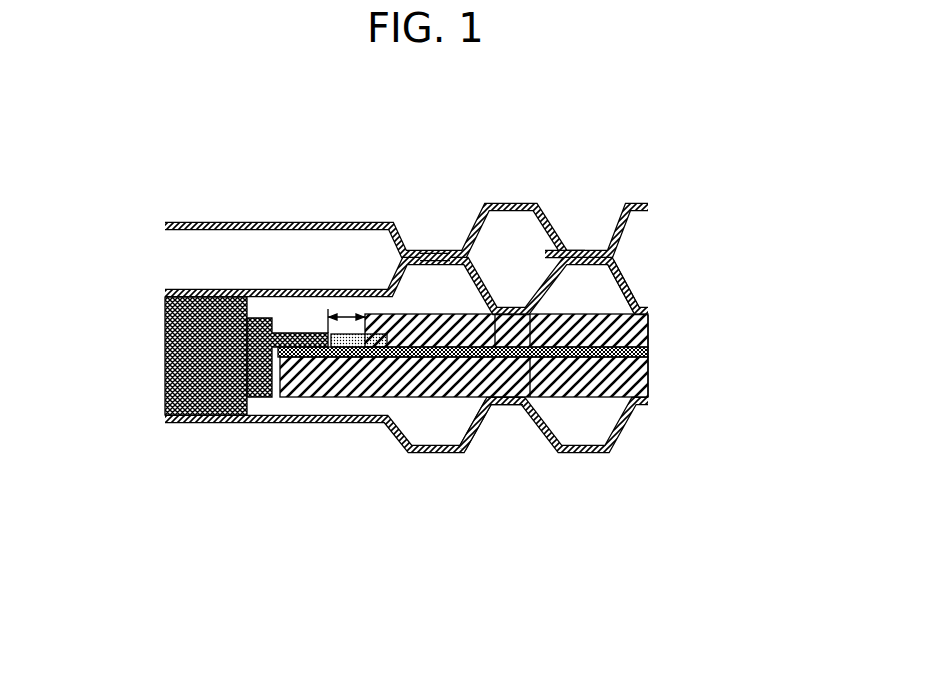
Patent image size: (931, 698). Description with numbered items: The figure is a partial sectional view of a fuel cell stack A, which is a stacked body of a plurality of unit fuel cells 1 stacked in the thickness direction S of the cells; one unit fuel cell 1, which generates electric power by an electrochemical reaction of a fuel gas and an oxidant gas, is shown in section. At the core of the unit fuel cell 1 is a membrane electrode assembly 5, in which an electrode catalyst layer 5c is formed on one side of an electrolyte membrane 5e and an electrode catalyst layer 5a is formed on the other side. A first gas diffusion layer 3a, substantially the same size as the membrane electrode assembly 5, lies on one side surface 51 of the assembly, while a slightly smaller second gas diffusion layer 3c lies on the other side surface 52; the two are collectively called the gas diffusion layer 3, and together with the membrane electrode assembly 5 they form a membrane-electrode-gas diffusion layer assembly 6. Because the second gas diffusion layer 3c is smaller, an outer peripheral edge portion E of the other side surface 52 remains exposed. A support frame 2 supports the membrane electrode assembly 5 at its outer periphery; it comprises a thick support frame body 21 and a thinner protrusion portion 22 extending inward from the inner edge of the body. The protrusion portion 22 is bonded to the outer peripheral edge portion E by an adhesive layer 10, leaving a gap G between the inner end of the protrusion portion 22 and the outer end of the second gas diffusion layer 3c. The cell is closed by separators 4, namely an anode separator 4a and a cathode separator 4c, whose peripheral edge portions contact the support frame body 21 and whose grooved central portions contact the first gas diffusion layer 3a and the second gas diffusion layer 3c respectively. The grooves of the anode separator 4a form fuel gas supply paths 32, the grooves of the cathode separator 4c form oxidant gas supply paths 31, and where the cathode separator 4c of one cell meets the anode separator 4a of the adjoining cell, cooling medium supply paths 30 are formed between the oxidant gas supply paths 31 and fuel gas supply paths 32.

The unit fuel cell 1 is at (145, 263).
The support frame 2 is at (137, 167).
The support frame body 21 is at (218, 312).
The protrusion portion 22 is at (293, 333).
The gas diffusion layer 3 is at (543, 167).
The first gas diffusion layer 3a is at (564, 250).
The second gas diffusion layer 3c is at (630, 306).
The separators 4 is at (545, 493).
The anode separator 4a is at (442, 250).
The cathode separator 4c is at (517, 405).
The membrane electrode assembly 5 is at (805, 167).
The electrode catalyst layer 5a is at (652, 357).
The electrode catalyst layer 5c is at (652, 350).
The electrolyte membrane 5e is at (652, 353).
The membrane-electrode-gas diffusion layer assembly 6 is at (752, 122).
The adhesive layer 10 is at (343, 367).
The cooling medium supply path 30 is at (525, 265).
The oxidant gas supply path 31 is at (589, 303).
The fuel gas supply path 32 is at (594, 431).
The one side surface 51 is at (406, 358).
The other side surface 52 is at (445, 345).
The fuel cell stack A is at (118, 142).
The outer peripheral edge portion E is at (320, 332).
The gap G is at (345, 312).
The thickness direction S is at (777, 436).